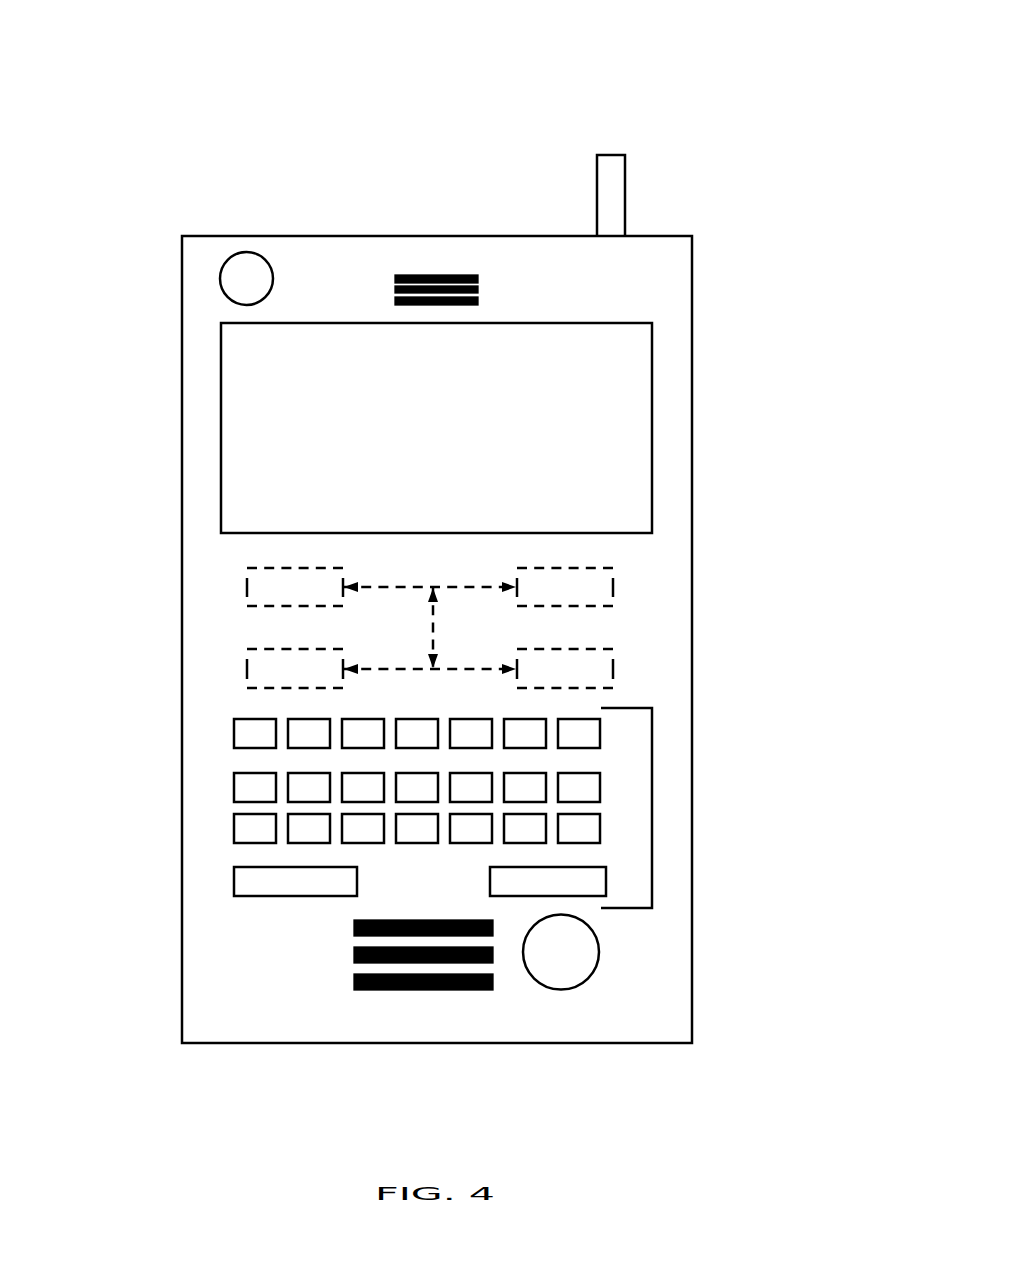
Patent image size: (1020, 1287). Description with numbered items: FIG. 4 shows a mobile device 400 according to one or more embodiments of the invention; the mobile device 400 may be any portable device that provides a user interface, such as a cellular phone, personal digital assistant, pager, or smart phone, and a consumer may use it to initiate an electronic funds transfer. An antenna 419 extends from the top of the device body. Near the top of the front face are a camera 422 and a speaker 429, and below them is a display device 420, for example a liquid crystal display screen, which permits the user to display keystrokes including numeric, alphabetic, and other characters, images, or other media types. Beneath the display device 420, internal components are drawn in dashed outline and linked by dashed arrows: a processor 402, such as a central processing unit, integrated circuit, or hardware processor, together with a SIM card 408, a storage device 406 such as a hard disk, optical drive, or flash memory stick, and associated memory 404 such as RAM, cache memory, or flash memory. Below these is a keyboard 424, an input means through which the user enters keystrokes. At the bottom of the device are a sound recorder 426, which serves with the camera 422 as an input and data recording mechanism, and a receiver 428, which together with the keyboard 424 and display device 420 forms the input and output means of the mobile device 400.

The mobile device 400 is at (503, 103).
The antenna 419 is at (617, 192).
The camera 422 is at (218, 275).
The speaker 429 is at (434, 276).
The display device 420 is at (626, 463).
The processor 402 is at (246, 587).
The SIM card 408 is at (614, 587).
The storage device 406 is at (246, 669).
The memory 404 is at (614, 669).
The keyboard 424 is at (653, 798).
The sound recorder 426 is at (562, 950).
The receiver 428 is at (420, 991).